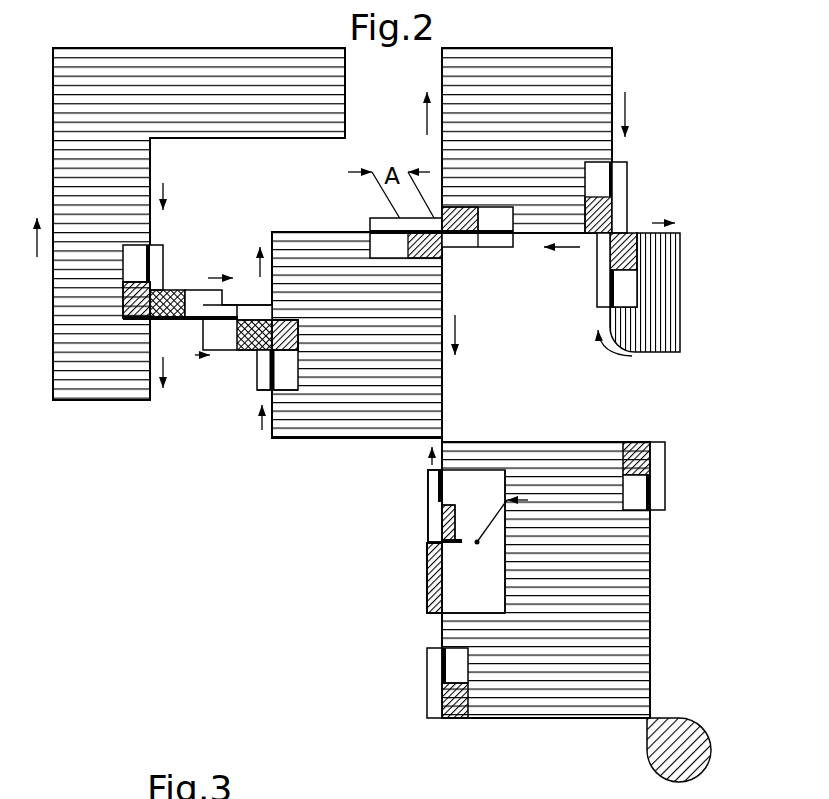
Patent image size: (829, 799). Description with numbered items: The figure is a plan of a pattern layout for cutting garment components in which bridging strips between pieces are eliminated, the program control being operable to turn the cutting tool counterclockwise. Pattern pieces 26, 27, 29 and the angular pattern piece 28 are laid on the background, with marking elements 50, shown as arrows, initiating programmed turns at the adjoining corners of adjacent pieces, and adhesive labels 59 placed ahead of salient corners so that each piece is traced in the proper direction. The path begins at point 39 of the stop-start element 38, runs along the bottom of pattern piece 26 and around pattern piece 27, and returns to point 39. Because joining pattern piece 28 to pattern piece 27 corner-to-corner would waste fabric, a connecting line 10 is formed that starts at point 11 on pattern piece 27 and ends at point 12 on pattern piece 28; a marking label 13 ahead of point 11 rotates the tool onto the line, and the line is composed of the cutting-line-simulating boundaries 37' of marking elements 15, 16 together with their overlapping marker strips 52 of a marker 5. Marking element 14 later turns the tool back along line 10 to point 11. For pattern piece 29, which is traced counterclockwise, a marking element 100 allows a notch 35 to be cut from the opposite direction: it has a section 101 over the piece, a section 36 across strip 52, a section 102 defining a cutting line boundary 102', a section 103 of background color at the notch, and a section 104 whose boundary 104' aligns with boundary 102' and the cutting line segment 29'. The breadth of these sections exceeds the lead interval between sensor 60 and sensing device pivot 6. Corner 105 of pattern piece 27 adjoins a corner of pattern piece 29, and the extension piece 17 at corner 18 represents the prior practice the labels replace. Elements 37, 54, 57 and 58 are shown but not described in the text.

In FIG. 2, the angular pattern piece 28 is at (151, 99).
In FIG. 2, the pattern piece 26 is at (514, 106).
In FIG. 2, the pattern piece 27 is at (348, 398).
In FIG. 2, the pattern piece 29 is at (546, 580).
In FIG. 2, the marking element 14 is at (167, 242).
In FIG. 2, the marking element 16 is at (203, 281).
In FIG. 2, the marking element 15 is at (246, 300).
In FIG. 2, the point 12 is at (148, 320).
In FIG. 2, the sealing strip 37 is at (277, 302).
In FIG. 2, the boundary 37' is at (211, 319).
In FIG. 2, the connecting line 10 is at (258, 319).
In FIG. 2, the marker strip 52 is at (203, 330).
In FIG. 2, the point 11 is at (256, 347).
In FIG. 2, the marking label 13 is at (258, 392).
In FIG. 2, the marking element 50 is at (443, 195).
In FIG. 2, the sliding direction arrow 54 is at (578, 248).
In FIG. 2, the adhesive label 59 is at (590, 301).
In FIG. 2, the marker 5 is at (640, 287).
In FIG. 2, the stop-start element 38 is at (645, 345).
In FIG. 2, the point 39 is at (680, 353).
In FIG. 2, the corner 105 is at (443, 432).
In FIG. 2, the section 101 is at (508, 474).
In FIG. 2, the section 36 is at (430, 494).
In FIG. 2, the section 102 is at (412, 525).
In FIG. 2, the cutting line boundary 102' is at (393, 519).
In FIG. 2, the marking element 100 is at (425, 542).
In FIG. 2, the sensing device pivot 6 is at (430, 550).
In FIG. 2, the sensor 60 is at (430, 592).
In FIG. 2, the notch 35 is at (478, 542).
In FIG. 3, the notch 35 is at (380, 798).
In FIG. 2, the boundary 104' is at (464, 578).
In FIG. 2, the section 104 is at (426, 630).
In FIG. 2, the section 103 is at (507, 604).
In FIG. 2, the cutting line segment 29' is at (403, 646).
In FIG. 2, the corner 18 is at (646, 712).
In FIG. 2, the extension piece 17 is at (702, 772).
In FIG. 3, the fig 3 element 57 is at (329, 786).
In FIG. 3, the fig 3 element 58 is at (432, 798).